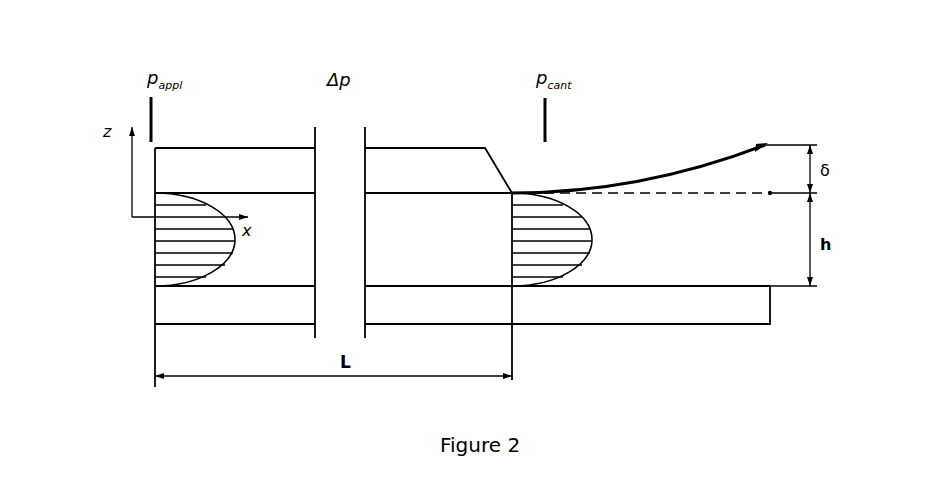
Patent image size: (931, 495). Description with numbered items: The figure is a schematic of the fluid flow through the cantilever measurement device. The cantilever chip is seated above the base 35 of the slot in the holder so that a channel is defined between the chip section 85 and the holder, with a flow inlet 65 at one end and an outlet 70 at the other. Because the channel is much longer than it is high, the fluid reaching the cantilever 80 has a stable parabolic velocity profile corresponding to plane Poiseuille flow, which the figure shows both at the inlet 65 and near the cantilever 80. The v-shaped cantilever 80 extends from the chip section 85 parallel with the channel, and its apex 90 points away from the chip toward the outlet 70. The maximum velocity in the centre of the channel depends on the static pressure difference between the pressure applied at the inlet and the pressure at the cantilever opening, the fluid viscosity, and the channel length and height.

The base 35 is at (237, 303).
The flow inlet 65 is at (155, 267).
The outlet 70 is at (770, 243).
The cantilever 80 is at (670, 168).
The chip section 85 is at (247, 167).
The apex 90 is at (766, 142).